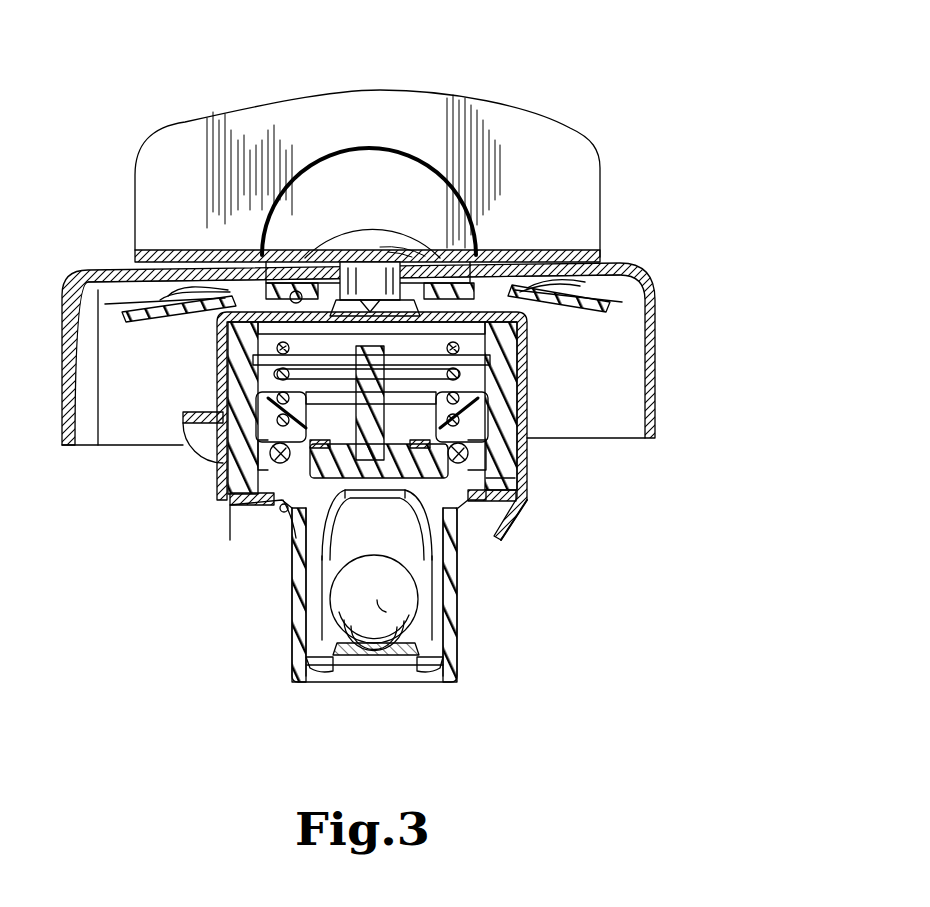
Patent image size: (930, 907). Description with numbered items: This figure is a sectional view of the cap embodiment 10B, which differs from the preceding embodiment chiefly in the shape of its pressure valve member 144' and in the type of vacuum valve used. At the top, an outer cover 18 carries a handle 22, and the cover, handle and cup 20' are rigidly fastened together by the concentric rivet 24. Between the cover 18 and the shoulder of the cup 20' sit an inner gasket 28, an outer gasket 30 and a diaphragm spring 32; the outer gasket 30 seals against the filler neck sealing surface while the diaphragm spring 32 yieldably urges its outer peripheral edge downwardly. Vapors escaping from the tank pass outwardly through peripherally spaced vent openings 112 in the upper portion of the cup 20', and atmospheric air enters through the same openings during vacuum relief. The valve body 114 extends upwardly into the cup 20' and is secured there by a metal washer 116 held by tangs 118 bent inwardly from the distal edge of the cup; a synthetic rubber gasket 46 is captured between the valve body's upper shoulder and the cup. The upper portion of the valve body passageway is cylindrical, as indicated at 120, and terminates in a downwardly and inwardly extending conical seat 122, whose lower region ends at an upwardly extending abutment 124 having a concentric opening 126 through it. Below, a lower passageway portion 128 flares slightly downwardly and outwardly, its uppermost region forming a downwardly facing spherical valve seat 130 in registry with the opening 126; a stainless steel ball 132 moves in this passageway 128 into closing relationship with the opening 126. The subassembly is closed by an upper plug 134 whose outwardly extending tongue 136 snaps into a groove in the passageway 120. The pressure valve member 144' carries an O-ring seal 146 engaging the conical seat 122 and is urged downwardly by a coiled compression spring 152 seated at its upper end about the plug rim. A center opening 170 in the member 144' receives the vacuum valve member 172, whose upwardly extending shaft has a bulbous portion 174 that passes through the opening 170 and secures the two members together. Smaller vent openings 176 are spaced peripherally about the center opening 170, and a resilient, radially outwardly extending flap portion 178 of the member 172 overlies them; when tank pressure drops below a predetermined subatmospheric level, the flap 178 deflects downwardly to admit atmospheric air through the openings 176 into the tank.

The embodiment 10B is at (537, 80).
The handle 22 is at (593, 185).
The concentric rivet 24 is at (351, 242).
The inner gasket 28 is at (274, 282).
The vent openings 112 is at (300, 283).
The diaphragm spring 32 is at (638, 290).
The outer cover 18 is at (656, 348).
The outer gasket 30 is at (600, 310).
The synthetic rubber gasket 46 is at (225, 317).
The cup 20' is at (397, 426).
The cylindrical upper passageway portion 120 is at (262, 384).
The O-ring seal 146 is at (236, 483).
The bulbous portion 174 is at (348, 398).
The coiled compression spring 152 is at (272, 375).
The vent openings 176 is at (357, 441).
The center opening 170 is at (383, 447).
The vacuum valve member 172 is at (364, 476).
The flap portion 178 is at (338, 460).
The valve member 144' is at (542, 459).
The tangs 118 is at (508, 538).
The metal washer 116 is at (492, 500).
The valve body 114 is at (462, 612).
The conical seat portion 122 is at (284, 510).
The abutment 124 is at (322, 530).
The lower passageway portion 128 is at (322, 576).
The stainless steel ball 132 is at (347, 610).
The spherical valve seat 130 is at (436, 560).
The concentric opening 126 is at (408, 550).
The upper plug 134 is at (375, 660).
The tongue 136 is at (333, 672).